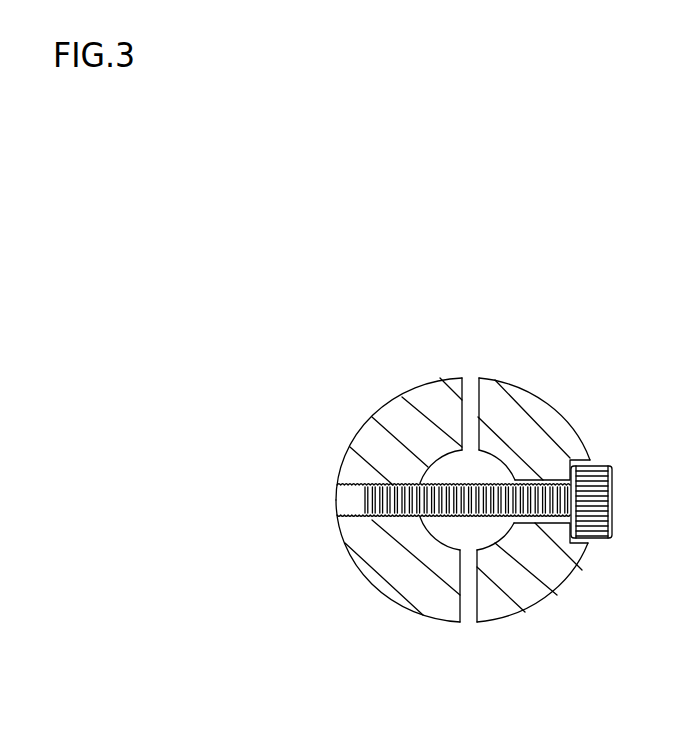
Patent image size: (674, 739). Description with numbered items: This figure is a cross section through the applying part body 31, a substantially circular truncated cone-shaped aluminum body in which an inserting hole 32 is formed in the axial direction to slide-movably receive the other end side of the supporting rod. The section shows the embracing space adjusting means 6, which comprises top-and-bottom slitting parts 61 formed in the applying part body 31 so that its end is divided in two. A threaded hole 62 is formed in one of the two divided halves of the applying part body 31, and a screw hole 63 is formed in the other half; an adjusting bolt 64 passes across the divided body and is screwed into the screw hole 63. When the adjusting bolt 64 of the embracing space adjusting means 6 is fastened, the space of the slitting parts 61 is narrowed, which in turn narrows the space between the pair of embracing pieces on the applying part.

The embracing space adjusting means 6 is at (604, 340).
The applying part body 31 is at (403, 415).
The inserting hole 32 is at (505, 543).
The slitting parts 61 is at (472, 377).
The threaded hole 62 is at (542, 524).
The screw hole 63 is at (342, 515).
The adjusting bolt 64 is at (613, 482).